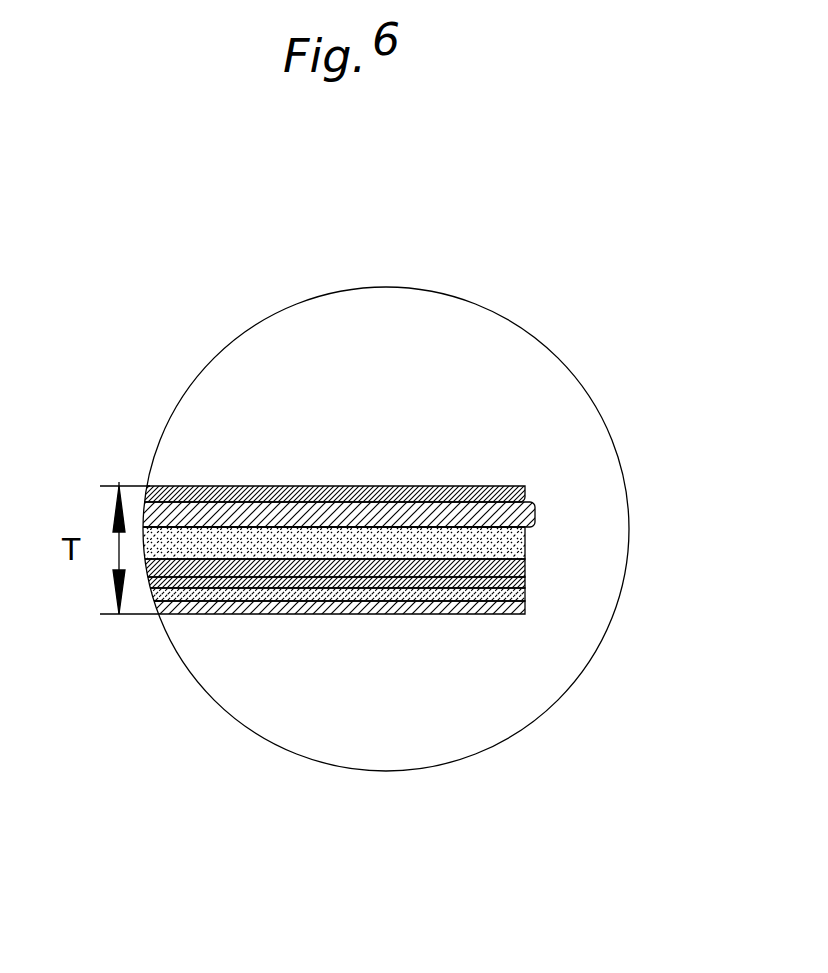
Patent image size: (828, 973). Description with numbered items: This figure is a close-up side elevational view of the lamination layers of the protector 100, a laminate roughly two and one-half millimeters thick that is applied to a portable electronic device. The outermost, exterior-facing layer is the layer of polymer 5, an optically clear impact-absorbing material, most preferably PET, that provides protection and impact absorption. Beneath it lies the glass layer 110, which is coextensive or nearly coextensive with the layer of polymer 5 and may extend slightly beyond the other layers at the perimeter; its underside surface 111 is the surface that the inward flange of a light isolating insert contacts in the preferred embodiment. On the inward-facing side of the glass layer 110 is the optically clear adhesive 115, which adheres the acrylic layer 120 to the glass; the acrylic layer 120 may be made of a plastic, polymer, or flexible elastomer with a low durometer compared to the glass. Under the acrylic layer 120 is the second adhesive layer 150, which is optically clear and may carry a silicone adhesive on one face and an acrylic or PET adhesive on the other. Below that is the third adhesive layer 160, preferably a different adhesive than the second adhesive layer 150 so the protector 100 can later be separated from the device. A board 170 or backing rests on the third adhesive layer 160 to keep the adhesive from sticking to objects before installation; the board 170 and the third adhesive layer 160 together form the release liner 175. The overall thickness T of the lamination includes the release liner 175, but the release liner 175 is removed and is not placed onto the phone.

The layer of polymer 5 is at (528, 487).
The protector 100 is at (376, 439).
The glass layer 110 is at (535, 515).
The underside surface 111 is at (218, 528).
The optically clear adhesive 115 is at (527, 543).
The acrylic layer 120 is at (527, 568).
The second adhesive layer 150 is at (525, 585).
The third adhesive layer 160 is at (525, 598).
The board 170 is at (525, 608).
The release liner 175 is at (152, 597).